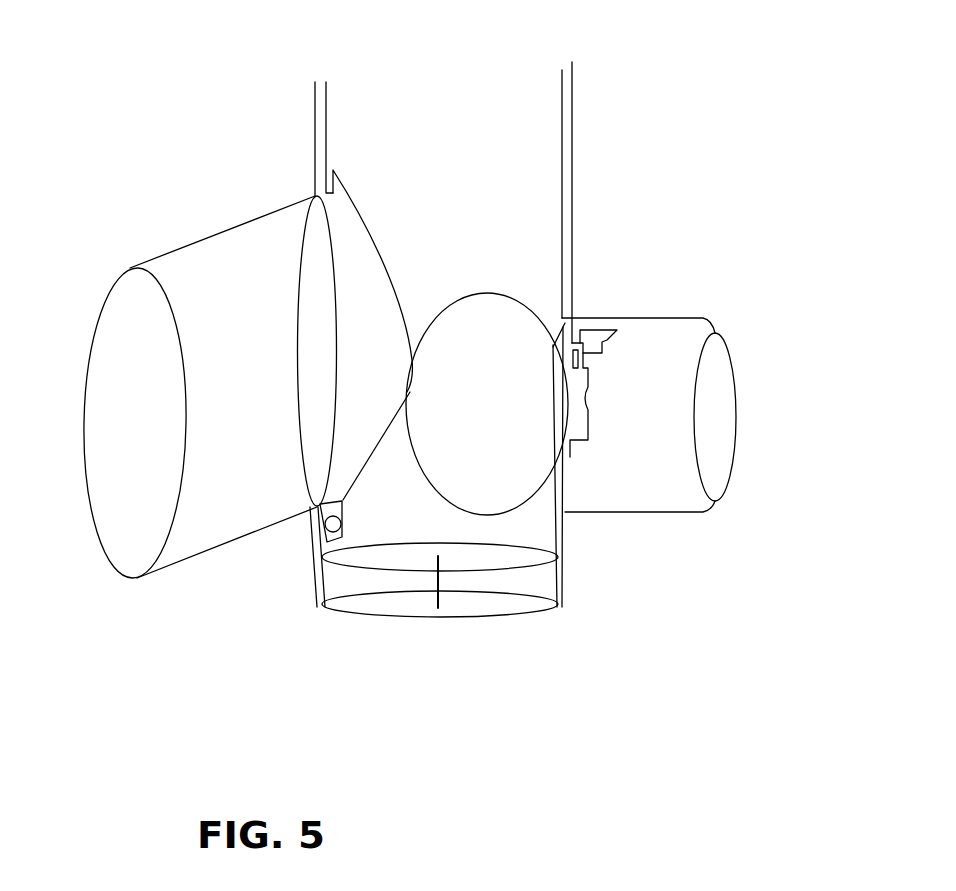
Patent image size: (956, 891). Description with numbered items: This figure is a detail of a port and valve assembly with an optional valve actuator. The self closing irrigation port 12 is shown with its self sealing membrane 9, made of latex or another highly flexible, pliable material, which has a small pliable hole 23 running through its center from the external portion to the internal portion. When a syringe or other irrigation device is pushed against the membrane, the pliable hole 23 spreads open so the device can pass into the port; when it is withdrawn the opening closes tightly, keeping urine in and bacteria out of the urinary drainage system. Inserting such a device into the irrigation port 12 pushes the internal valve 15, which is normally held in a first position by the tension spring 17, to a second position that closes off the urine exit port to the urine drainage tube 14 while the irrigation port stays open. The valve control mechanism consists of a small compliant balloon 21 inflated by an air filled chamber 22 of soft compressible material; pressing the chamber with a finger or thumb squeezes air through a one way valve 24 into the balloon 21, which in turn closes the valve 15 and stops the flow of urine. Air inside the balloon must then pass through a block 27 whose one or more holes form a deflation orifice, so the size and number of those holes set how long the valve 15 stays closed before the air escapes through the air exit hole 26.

The self sealing membrane 9 is at (515, 605).
The self closing irrigation port 12 is at (538, 583).
The urine drainage tube 14 is at (212, 325).
The internal valve 15 is at (367, 330).
The tension spring 17 is at (323, 530).
The compliant balloon 21 is at (498, 467).
The air filled chamber 22 is at (682, 420).
The pliable hole 23 is at (430, 585).
The one way valve 24 is at (588, 398).
The air exit hole 26 is at (565, 327).
The block 27 is at (603, 330).